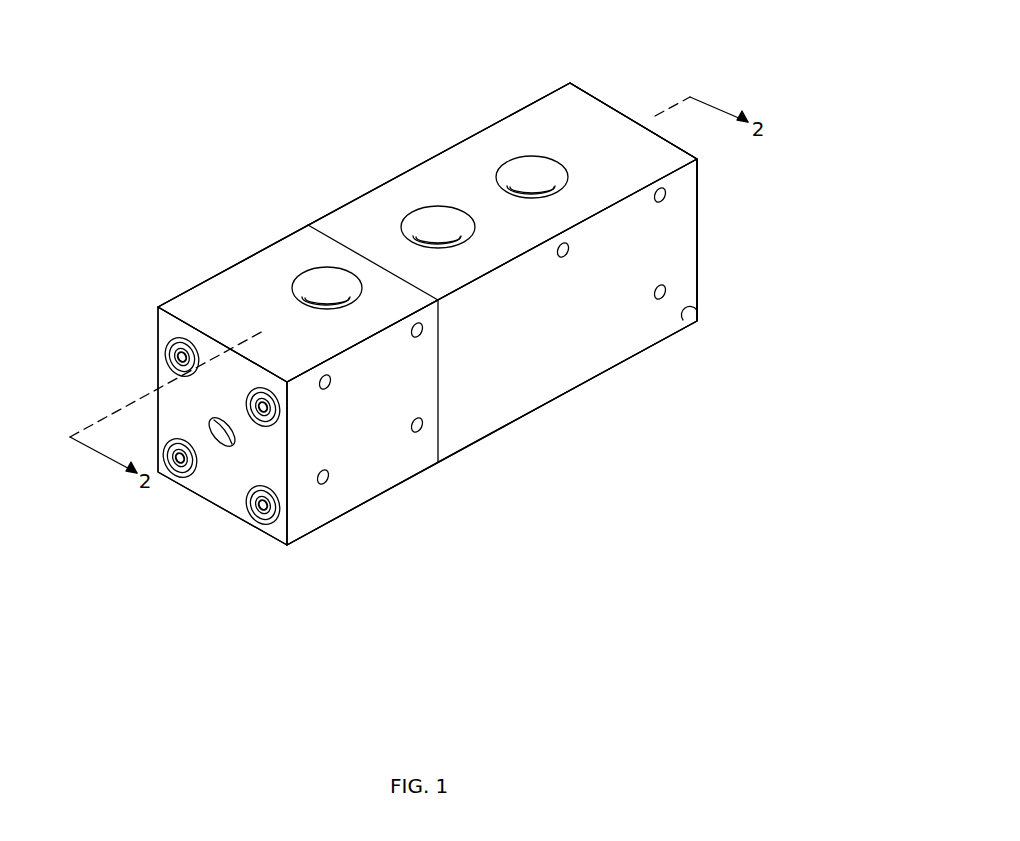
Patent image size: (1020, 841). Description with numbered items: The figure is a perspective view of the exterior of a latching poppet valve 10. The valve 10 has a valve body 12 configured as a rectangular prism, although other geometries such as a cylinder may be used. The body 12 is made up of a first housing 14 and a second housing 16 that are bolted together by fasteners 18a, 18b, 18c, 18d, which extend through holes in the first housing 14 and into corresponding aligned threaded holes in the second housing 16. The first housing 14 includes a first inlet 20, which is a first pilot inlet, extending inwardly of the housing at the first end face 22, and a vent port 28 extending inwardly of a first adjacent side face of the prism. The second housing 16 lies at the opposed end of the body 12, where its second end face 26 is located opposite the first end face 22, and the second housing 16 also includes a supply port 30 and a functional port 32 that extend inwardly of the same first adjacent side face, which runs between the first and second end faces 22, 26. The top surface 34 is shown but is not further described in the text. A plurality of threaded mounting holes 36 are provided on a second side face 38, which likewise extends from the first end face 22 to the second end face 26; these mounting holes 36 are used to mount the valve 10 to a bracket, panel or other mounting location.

The latching poppet valve 10 is at (768, 78).
The valve body 12 is at (712, 230).
The first housing 14 is at (380, 502).
The second housing 16 is at (570, 405).
The fastener 18a is at (168, 357).
The fastener 18b is at (283, 407).
The fastener 18c is at (260, 527).
The fastener 18d is at (170, 470).
The first inlet 20 is at (227, 444).
The first end face 22 is at (208, 358).
The second end face 26 is at (710, 180).
The vent port 28 is at (320, 282).
The supply port 30 is at (523, 168).
The functional port 32 is at (423, 225).
The top surface 34 is at (590, 125).
The threaded mounting holes 36 is at (666, 288).
The second side face 38 is at (698, 308).